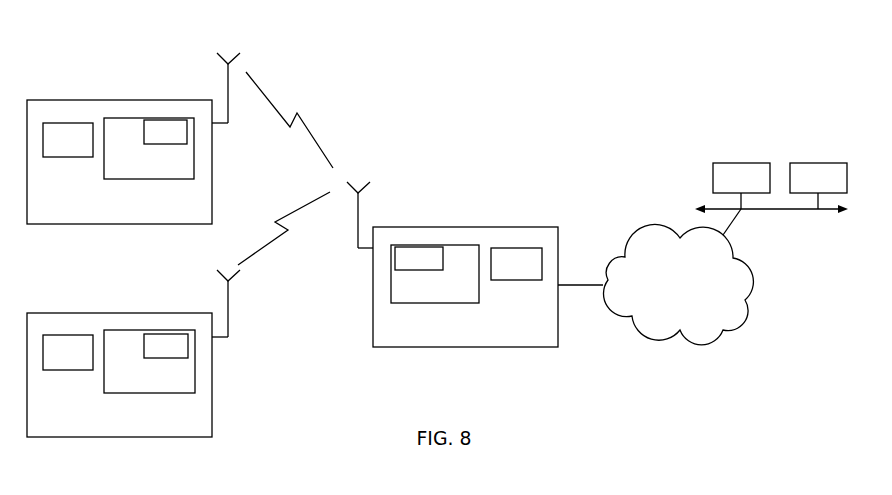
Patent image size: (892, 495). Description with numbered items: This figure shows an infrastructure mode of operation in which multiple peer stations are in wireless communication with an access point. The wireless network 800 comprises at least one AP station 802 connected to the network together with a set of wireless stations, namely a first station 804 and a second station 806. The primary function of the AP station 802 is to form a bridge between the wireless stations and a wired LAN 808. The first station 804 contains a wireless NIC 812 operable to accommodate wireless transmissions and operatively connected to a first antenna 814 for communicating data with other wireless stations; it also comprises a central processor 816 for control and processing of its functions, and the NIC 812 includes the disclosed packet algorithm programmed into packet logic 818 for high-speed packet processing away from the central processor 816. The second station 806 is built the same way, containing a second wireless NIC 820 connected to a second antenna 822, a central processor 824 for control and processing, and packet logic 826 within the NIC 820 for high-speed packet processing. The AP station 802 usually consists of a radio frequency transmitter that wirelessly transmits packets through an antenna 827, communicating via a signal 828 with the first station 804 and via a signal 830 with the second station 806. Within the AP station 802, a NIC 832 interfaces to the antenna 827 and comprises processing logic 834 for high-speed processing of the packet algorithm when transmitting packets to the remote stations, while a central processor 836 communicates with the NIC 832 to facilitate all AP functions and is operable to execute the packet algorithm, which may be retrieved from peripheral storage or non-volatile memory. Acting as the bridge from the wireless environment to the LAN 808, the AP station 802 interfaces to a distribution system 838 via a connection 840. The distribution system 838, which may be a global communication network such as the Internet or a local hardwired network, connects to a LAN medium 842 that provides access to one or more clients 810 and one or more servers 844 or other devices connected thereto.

The wireless network 800 is at (570, 56).
The AP station 802 is at (486, 227).
The first station 804 is at (117, 100).
The second station 806 is at (117, 313).
The wired LAN 808 is at (620, 150).
The client 810 is at (820, 163).
The wireless NIC 812 is at (116, 172).
The first antenna 814 is at (228, 123).
The central processor 816 is at (54, 147).
The packet logic 818 is at (153, 139).
The second wireless NIC 820 is at (116, 385).
The second antenna 822 is at (228, 337).
The central processor 824 is at (55, 362).
The packet logic 826 is at (153, 353).
The antenna 827 is at (357, 248).
The signal 828 is at (297, 118).
The signal 830 is at (268, 243).
The NIC 832 is at (449, 297).
The processing logic 834 is at (408, 266).
The central processor 836 is at (503, 271).
The distribution system 838 is at (693, 343).
The connection 840 is at (597, 287).
The LAN medium 842 is at (758, 210).
The server 844 is at (742, 163).